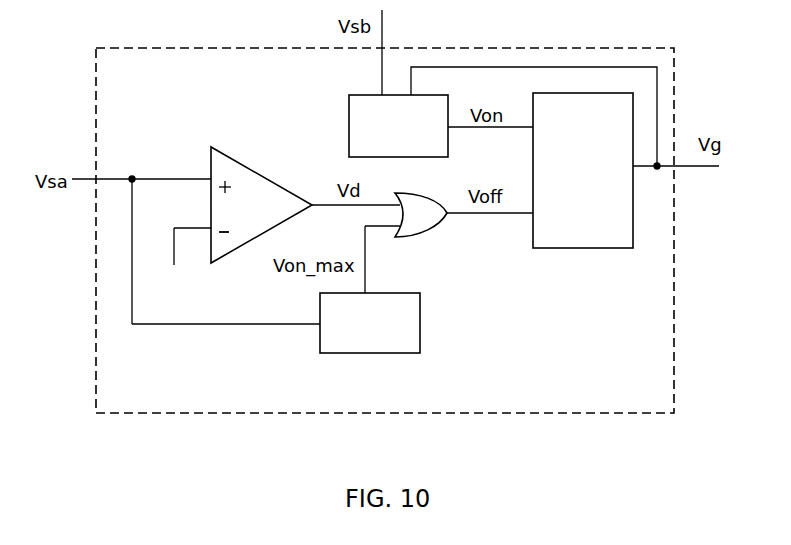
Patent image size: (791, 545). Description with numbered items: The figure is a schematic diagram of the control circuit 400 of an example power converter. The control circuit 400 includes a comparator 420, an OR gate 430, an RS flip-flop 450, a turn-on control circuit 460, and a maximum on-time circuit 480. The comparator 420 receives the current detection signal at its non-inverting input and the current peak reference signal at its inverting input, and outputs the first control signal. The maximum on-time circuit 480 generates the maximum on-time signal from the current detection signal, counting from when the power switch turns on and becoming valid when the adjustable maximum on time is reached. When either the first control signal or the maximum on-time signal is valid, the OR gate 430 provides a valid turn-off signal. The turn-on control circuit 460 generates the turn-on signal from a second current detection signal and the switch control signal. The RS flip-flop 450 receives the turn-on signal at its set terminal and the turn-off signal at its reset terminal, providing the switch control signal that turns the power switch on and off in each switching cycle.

The control circuit 400 is at (632, 394).
The comparator 420 is at (243, 163).
The OR gate 430 is at (431, 229).
The RS flip-flop 450 is at (600, 184).
The turn-on control circuit 460 is at (383, 136).
The maximum on-time circuit 480 is at (355, 334).